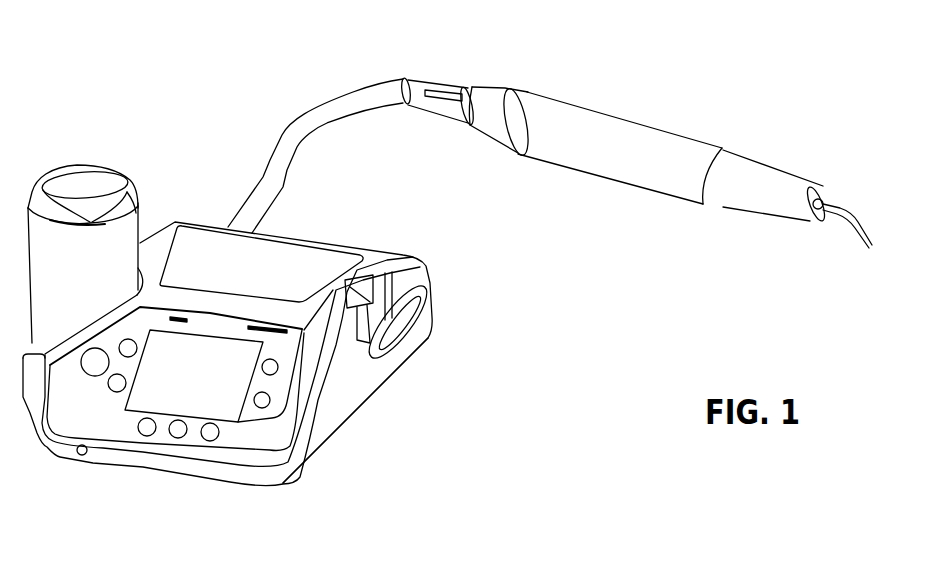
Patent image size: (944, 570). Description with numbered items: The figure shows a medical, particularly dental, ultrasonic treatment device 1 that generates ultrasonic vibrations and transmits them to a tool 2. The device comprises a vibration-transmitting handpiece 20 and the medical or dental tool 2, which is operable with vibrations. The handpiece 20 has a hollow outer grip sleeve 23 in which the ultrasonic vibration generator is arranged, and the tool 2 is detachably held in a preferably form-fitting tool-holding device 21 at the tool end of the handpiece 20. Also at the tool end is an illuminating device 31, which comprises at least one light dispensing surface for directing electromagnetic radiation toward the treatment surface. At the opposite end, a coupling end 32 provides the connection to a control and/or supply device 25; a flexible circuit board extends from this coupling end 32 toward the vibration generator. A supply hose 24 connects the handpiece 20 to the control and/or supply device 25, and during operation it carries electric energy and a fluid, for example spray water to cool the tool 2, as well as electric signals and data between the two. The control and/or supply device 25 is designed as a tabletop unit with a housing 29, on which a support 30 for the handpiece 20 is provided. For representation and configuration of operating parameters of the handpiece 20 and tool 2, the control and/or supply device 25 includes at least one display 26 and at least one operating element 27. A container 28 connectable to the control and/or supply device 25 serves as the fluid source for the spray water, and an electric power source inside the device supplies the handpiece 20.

The ultrasonic treatment device 1 is at (177, 87).
The tool 2 is at (837, 205).
The handpiece 20 is at (622, 101).
The tool-holding device 21 is at (829, 188).
The grip sleeve 23 is at (640, 187).
The supply hose 24 is at (303, 137).
The control and/or supply device 25 is at (455, 272).
The display 26 is at (203, 393).
The operating element 27 is at (117, 390).
The container 28 is at (100, 292).
The housing 29 is at (333, 395).
The support 30 is at (413, 318).
The illuminating device 31 is at (823, 228).
The coupling end 32 is at (523, 80).